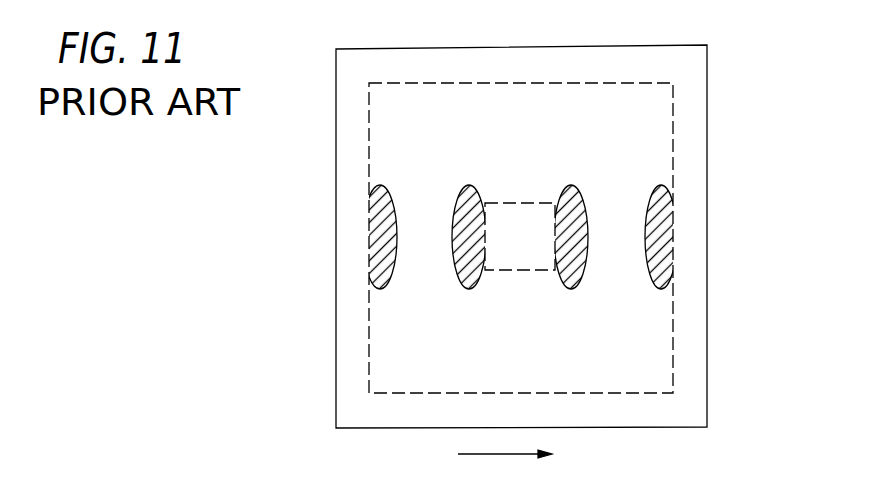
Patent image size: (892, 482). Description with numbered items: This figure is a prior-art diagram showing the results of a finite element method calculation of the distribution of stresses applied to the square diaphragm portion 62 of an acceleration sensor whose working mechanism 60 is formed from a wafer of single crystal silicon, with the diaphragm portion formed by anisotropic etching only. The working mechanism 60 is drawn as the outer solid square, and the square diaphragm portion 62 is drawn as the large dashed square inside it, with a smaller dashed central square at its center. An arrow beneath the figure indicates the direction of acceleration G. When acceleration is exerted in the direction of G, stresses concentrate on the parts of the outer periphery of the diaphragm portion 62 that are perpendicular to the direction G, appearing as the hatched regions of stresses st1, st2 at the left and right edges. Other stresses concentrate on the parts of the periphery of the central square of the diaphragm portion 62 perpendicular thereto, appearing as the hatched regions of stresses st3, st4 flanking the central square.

The working mechanism 60 is at (707, 69).
The square diaphragm portion 62 is at (633, 139).
The stress st1 is at (662, 233).
The stress st2 is at (378, 237).
The stress st3 is at (563, 197).
The stress st4 is at (475, 197).
The direction of acceleration G is at (516, 455).